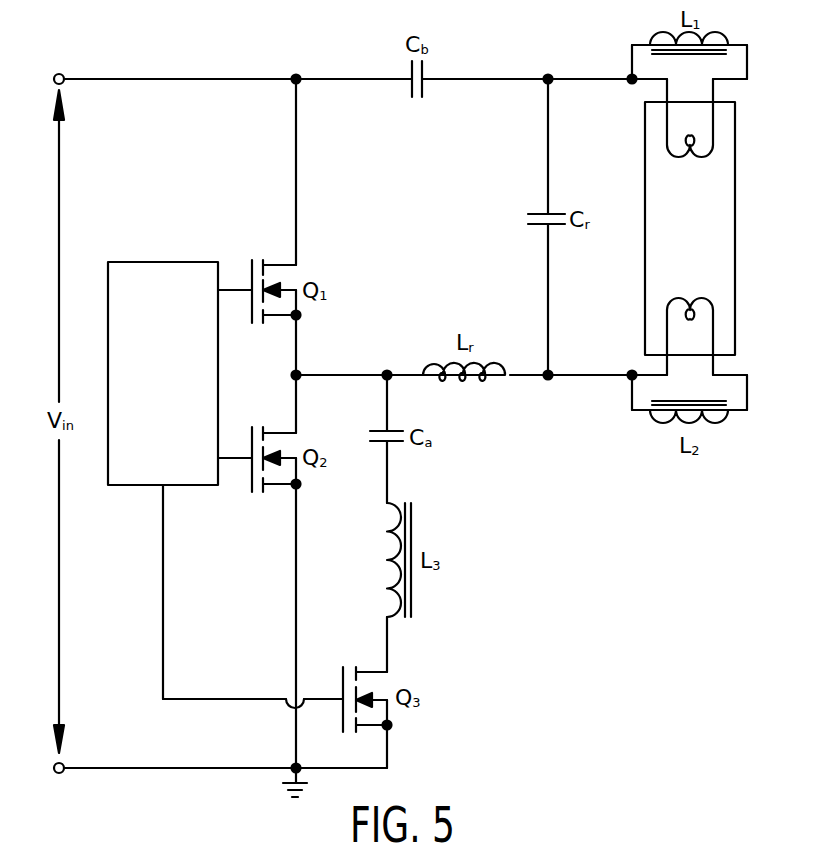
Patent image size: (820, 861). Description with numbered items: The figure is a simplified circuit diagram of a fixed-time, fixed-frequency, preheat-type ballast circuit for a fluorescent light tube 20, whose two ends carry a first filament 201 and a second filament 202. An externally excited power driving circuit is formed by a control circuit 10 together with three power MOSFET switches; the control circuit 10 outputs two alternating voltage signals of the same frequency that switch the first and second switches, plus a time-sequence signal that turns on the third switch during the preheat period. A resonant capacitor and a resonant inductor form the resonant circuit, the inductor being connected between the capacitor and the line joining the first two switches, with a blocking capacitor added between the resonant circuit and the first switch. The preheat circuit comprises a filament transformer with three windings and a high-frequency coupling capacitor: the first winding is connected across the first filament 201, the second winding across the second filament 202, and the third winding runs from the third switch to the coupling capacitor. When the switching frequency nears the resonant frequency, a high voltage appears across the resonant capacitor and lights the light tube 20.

The control circuit 10 is at (162, 271).
The fluorescent light tube 20 is at (721, 227).
The first filament 201 is at (711, 151).
The second filament 202 is at (713, 310).